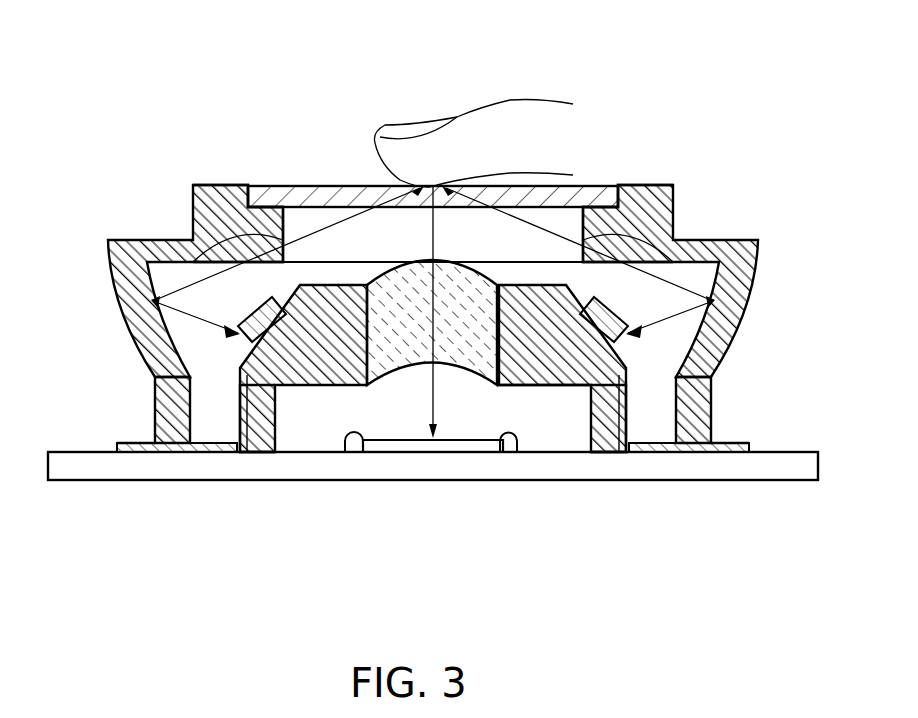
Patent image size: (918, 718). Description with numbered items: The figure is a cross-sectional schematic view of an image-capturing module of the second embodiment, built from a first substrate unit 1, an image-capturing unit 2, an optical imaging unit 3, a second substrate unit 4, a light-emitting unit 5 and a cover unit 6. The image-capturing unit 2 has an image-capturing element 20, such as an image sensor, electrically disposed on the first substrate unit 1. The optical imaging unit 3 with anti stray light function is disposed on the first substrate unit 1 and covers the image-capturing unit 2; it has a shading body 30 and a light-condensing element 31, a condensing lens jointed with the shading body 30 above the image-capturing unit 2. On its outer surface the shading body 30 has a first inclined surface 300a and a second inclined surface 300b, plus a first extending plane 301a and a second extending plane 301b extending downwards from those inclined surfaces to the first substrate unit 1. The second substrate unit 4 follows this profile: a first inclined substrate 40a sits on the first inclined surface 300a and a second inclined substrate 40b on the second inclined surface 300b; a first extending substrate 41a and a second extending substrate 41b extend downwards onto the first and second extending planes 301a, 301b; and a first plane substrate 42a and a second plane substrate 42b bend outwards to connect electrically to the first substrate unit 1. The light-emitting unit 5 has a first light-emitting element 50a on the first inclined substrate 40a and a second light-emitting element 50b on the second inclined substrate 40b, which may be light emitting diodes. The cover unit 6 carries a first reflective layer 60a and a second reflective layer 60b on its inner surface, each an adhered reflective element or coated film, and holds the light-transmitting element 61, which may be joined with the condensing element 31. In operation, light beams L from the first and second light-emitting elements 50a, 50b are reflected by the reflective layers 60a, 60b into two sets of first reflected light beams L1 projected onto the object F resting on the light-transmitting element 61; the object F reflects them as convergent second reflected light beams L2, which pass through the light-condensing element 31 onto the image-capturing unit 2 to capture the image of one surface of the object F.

The first substrate unit 1 is at (787, 448).
The image-capturing unit 2 is at (462, 460).
The image-capturing element 20 is at (390, 447).
The optical imaging unit 3 is at (456, 435).
The shading body 30 is at (456, 435).
The light-condensing element 31 is at (513, 386).
The first inclined surface 300a is at (322, 388).
The second inclined surface 300b is at (584, 388).
The first extending plane 301a is at (270, 440).
The second extending plane 301b is at (603, 440).
The second substrate unit 4 is at (430, 466).
The first inclined substrate 40a is at (190, 443).
The second inclined substrate 40b is at (693, 443).
The first extending substrate 41a is at (213, 447).
The second extending substrate 41b is at (663, 447).
The first plane substrate 42a is at (140, 452).
The second plane substrate 42b is at (727, 452).
The light-emitting unit 5 is at (449, 309).
The first light-emitting element 50a is at (260, 318).
The second light-emitting element 50b is at (635, 325).
The cover unit 6 is at (432, 238).
The first reflective layer 60a is at (168, 262).
The second reflective layer 60b is at (698, 262).
The light-transmitting element 61 is at (280, 200).
The object F is at (513, 95).
The light beams L is at (150, 300).
The first reflected light beams L1 is at (350, 212).
The second reflected light beams L2 is at (436, 243).